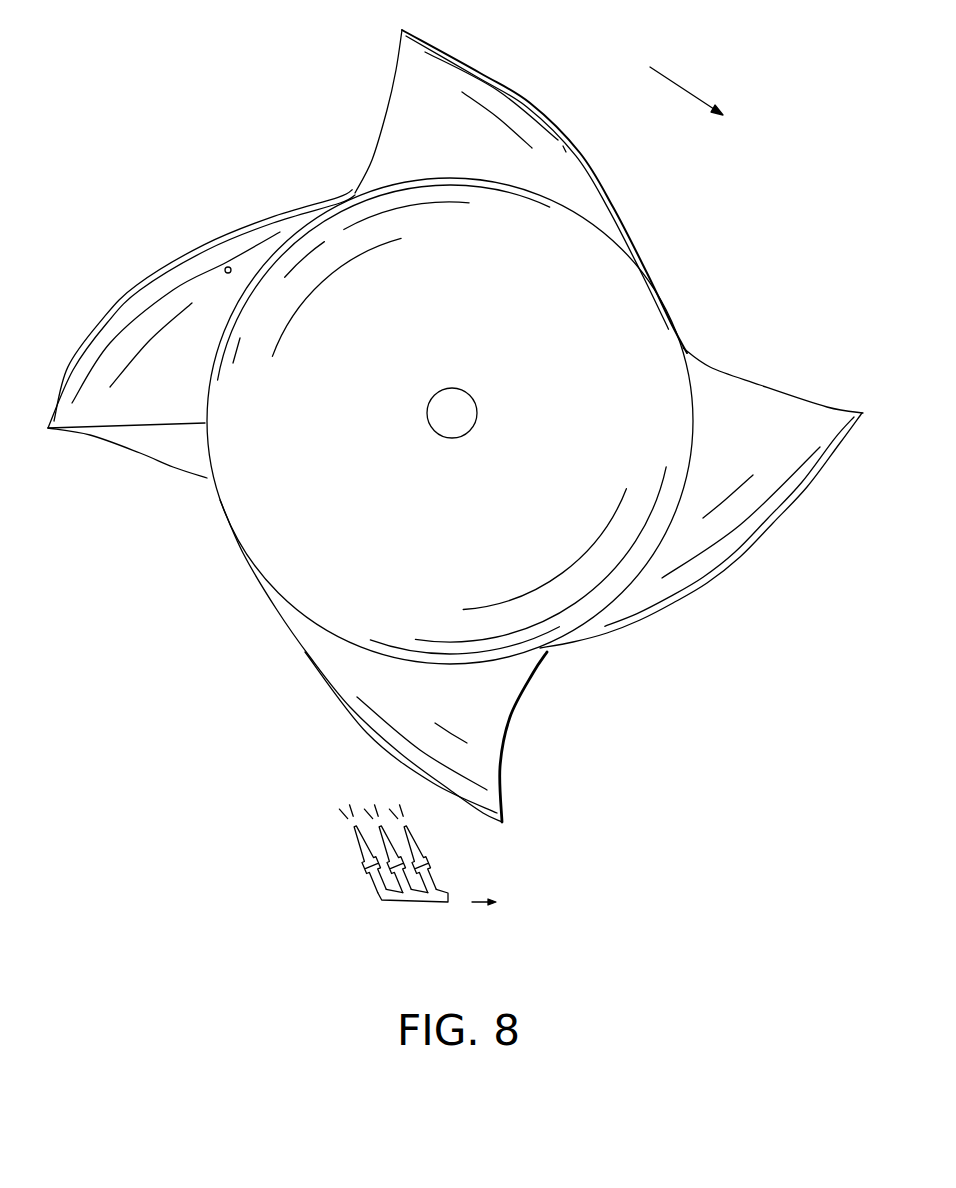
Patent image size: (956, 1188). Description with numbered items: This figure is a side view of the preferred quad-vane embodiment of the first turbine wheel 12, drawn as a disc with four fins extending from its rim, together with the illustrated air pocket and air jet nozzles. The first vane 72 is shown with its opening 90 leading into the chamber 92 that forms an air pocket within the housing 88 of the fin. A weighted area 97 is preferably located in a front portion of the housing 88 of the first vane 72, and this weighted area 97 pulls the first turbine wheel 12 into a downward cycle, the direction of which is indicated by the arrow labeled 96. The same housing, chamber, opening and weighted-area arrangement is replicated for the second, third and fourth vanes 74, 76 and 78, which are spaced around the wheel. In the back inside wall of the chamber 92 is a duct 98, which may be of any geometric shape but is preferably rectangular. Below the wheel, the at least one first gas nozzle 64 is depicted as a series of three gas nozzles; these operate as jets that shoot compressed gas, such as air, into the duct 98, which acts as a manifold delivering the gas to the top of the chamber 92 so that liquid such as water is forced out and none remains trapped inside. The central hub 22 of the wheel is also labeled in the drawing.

The first turbine wheel 12 is at (465, 355).
The hub 22 is at (437, 428).
The first gas nozzle 64 is at (351, 864).
The first vane 72 is at (201, 341).
The second vane 74 is at (450, 117).
The third vane 76 is at (770, 466).
The fourth vane 78 is at (487, 770).
The housing 88 is at (80, 363).
The opening 90 is at (137, 426).
The chamber 92 is at (180, 367).
The downward cycle 96 is at (685, 88).
The weighted area 97 is at (225, 268).
The duct 98 is at (142, 323).